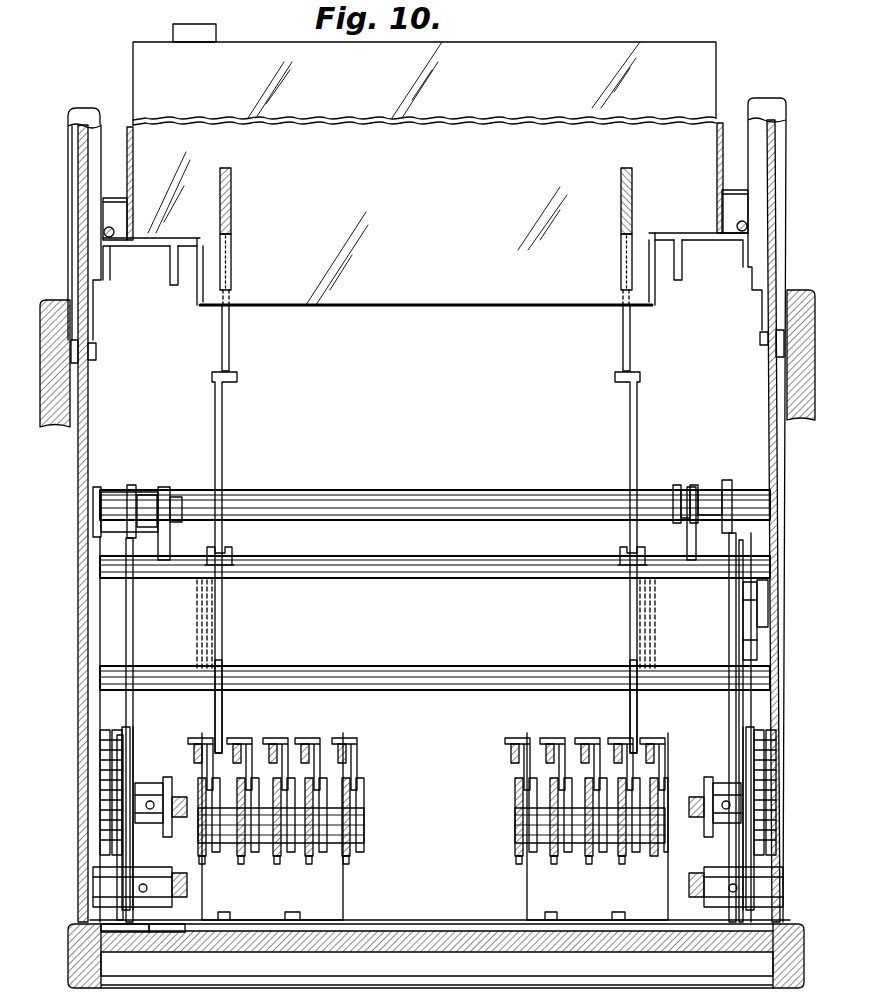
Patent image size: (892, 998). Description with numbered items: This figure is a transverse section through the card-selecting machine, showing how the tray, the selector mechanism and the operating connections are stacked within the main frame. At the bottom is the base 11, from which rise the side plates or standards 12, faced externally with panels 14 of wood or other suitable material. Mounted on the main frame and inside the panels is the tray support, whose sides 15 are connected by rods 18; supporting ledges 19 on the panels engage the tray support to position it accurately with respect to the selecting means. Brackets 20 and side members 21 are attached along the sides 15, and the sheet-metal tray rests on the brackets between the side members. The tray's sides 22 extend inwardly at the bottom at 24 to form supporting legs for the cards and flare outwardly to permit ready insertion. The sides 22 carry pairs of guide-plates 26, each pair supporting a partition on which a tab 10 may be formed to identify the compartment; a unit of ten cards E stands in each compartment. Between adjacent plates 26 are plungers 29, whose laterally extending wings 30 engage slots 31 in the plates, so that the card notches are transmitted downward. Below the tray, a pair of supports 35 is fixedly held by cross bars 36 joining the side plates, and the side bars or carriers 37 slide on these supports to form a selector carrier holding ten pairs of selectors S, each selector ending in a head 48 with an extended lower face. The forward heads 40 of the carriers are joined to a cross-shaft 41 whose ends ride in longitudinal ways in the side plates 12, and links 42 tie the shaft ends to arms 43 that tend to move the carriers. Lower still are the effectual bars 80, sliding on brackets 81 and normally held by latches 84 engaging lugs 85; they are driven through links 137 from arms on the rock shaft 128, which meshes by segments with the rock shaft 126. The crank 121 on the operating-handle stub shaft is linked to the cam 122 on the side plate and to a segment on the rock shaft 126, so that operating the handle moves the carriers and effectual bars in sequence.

The tab 10 is at (174, 32).
The cards E is at (500, 46).
The sides of the tray support 15 is at (68, 157).
The side plates or standards 12 is at (78, 242).
The panels 14 is at (56, 428).
The supporting ledges 19 is at (96, 352).
The sides of the tray 22 is at (128, 140).
The side members 21 is at (114, 198).
The rods 18 is at (114, 232).
The brackets 20 is at (148, 248).
The inwardly extending bottom portions of the tray sides 24 is at (186, 250).
The guide-plates 26 is at (405, 307).
The slots 31 is at (232, 192).
The wings 30 is at (232, 262).
The plungers 29 is at (230, 346).
The selectors S is at (222, 415).
The head 48 is at (214, 713).
The cross-shaft 41 is at (418, 491).
The cross bars 36 is at (430, 560).
The links 42 is at (152, 492).
The heads 40 is at (171, 538).
The arms 43 is at (133, 618).
The side bars or carriers 37 is at (225, 546).
The supports 35 is at (214, 620).
The crank 121 is at (752, 625).
The latch 84 is at (240, 738).
The lug 85 is at (192, 744).
The effectual bars 80 is at (312, 810).
The links 137 is at (277, 864).
The brackets 81 is at (345, 858).
The rock shaft 126 is at (712, 828).
The cam 122 is at (726, 765).
The rock shaft 128 is at (689, 885).
The base 11 is at (425, 945).